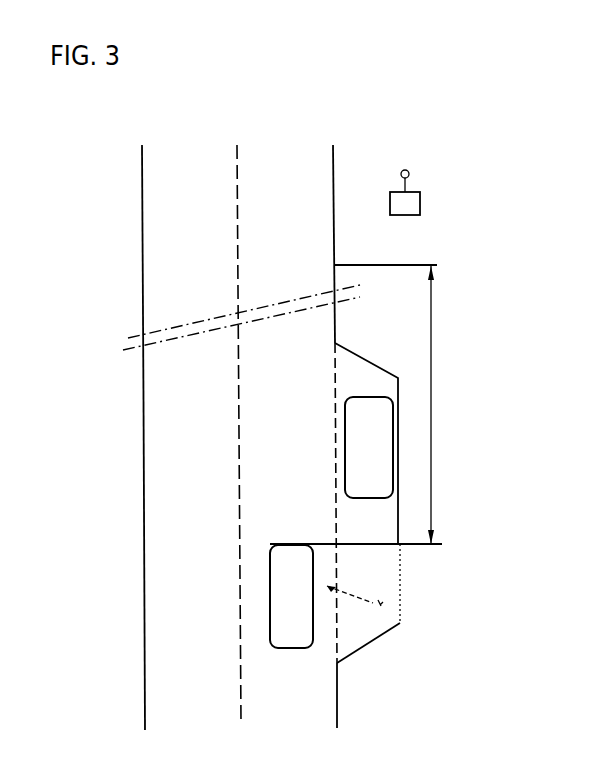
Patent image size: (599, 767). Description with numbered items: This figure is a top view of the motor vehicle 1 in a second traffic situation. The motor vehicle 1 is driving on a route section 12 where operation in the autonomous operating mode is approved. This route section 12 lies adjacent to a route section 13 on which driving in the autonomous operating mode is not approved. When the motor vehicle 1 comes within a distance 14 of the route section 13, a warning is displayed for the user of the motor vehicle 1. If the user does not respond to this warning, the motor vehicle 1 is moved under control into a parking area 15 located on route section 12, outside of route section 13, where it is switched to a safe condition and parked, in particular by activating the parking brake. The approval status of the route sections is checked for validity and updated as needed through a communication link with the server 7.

The motor vehicle 1 is at (371, 390).
The server 7 is at (420, 202).
The route section 12 is at (167, 525).
The route section 13 is at (158, 280).
The distance 14 is at (431, 338).
The parking area 15 is at (387, 574).